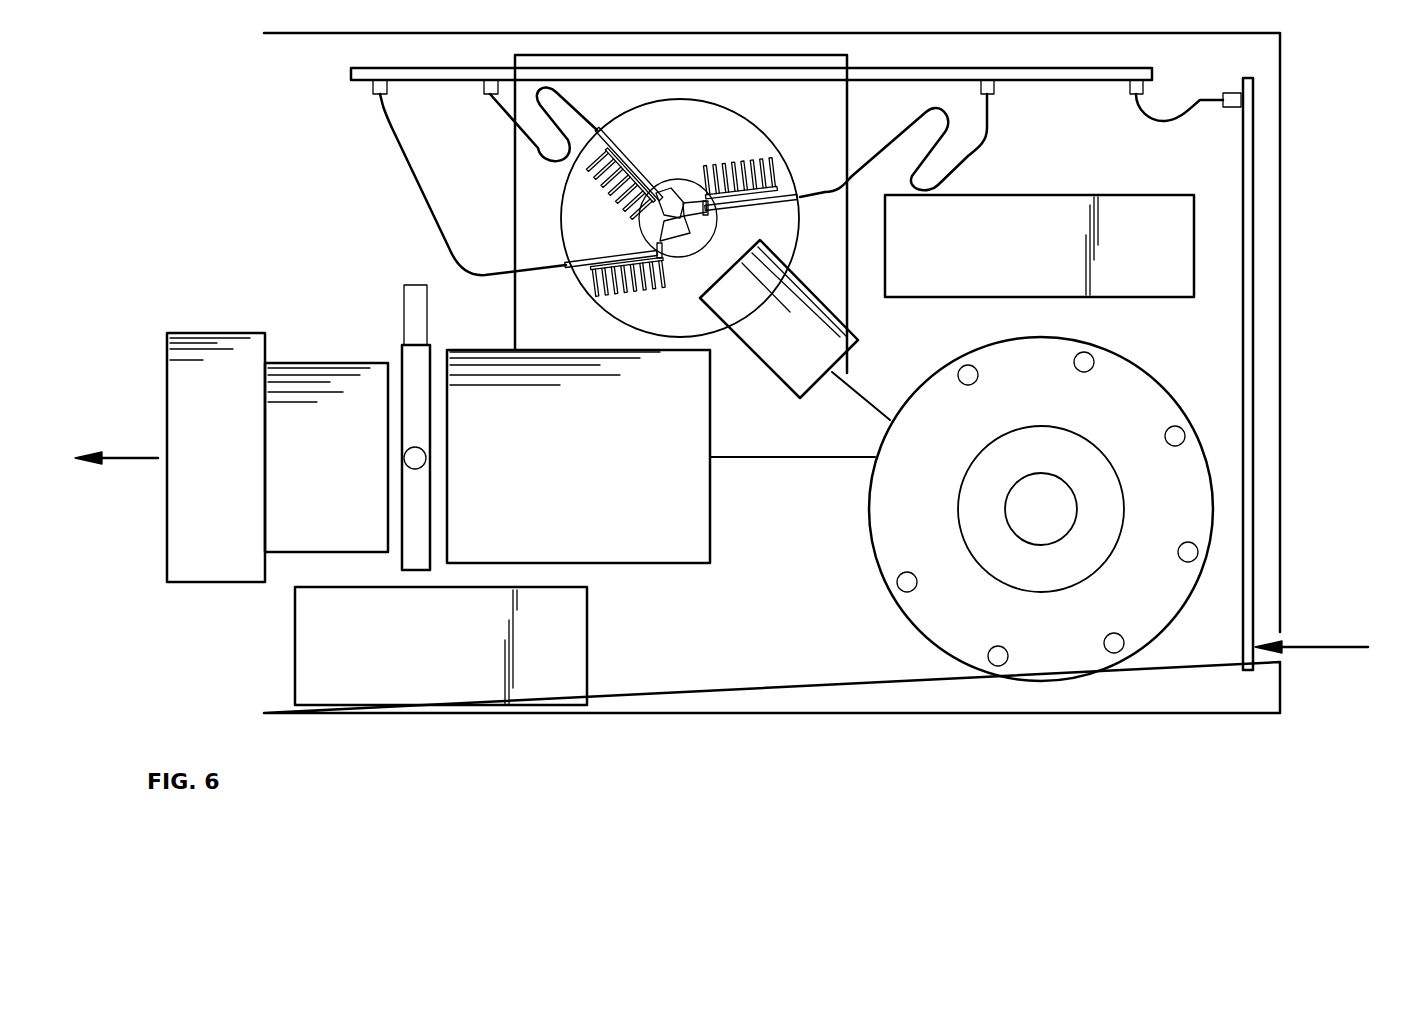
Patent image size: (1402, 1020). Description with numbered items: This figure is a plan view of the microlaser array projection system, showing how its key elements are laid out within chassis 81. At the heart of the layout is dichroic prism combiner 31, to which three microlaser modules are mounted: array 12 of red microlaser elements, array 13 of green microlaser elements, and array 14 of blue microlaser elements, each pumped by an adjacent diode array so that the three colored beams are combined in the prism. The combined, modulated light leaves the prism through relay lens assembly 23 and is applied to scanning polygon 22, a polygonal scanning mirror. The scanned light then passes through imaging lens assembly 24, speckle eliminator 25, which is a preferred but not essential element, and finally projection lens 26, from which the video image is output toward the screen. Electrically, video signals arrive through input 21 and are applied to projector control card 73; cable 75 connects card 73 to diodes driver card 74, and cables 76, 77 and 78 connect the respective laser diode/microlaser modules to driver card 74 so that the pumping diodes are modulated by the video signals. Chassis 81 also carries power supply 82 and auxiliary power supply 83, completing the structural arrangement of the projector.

The array of red microlaser elements 12 is at (753, 200).
The array of green microlaser elements 13 is at (633, 170).
The array of blue microlaser elements 14 is at (620, 253).
The cable 21 is at (1320, 640).
The scanning polygon 22 is at (1132, 377).
The relay lens assembly 23 is at (768, 360).
The imaging lens assembly 24 is at (678, 555).
The speckle eliminator 25 is at (400, 350).
The projection lens 26 is at (203, 580).
The dichroic prism combiner 31 is at (688, 240).
The projector control card 73 is at (1255, 396).
The diodes driver card 74 is at (1068, 83).
The cable 75 is at (1165, 122).
The cable 76 is at (952, 163).
The cable 77 is at (512, 124).
The cable 78 is at (405, 165).
The chassis 81 is at (1197, 693).
The power supply 82 is at (913, 290).
The auxiliary power supply 83 is at (578, 663).